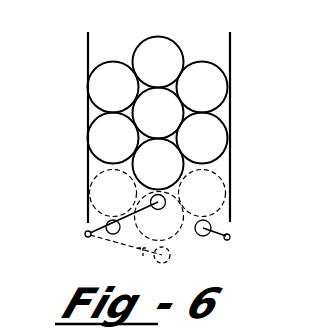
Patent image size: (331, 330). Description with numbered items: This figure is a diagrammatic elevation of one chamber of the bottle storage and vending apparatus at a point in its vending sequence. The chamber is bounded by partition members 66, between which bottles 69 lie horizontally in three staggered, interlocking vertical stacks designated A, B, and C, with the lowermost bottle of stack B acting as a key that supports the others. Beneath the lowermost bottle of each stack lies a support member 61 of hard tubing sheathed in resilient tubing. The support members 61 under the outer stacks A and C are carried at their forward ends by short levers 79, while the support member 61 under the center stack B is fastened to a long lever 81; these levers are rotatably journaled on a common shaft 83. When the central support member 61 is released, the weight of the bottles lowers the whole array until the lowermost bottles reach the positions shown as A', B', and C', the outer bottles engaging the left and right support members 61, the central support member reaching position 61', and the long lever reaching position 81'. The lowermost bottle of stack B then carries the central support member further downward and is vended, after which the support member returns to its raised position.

The partition member 66 is at (88, 43).
The bottles 69 is at (203, 62).
The common shaft 83 is at (85, 234).
The short lever 79 is at (105, 228).
The long lever 81 is at (158, 240).
The long lever position 81' is at (142, 265).
The support member 61 is at (179, 229).
The central support member position 61' is at (181, 265).